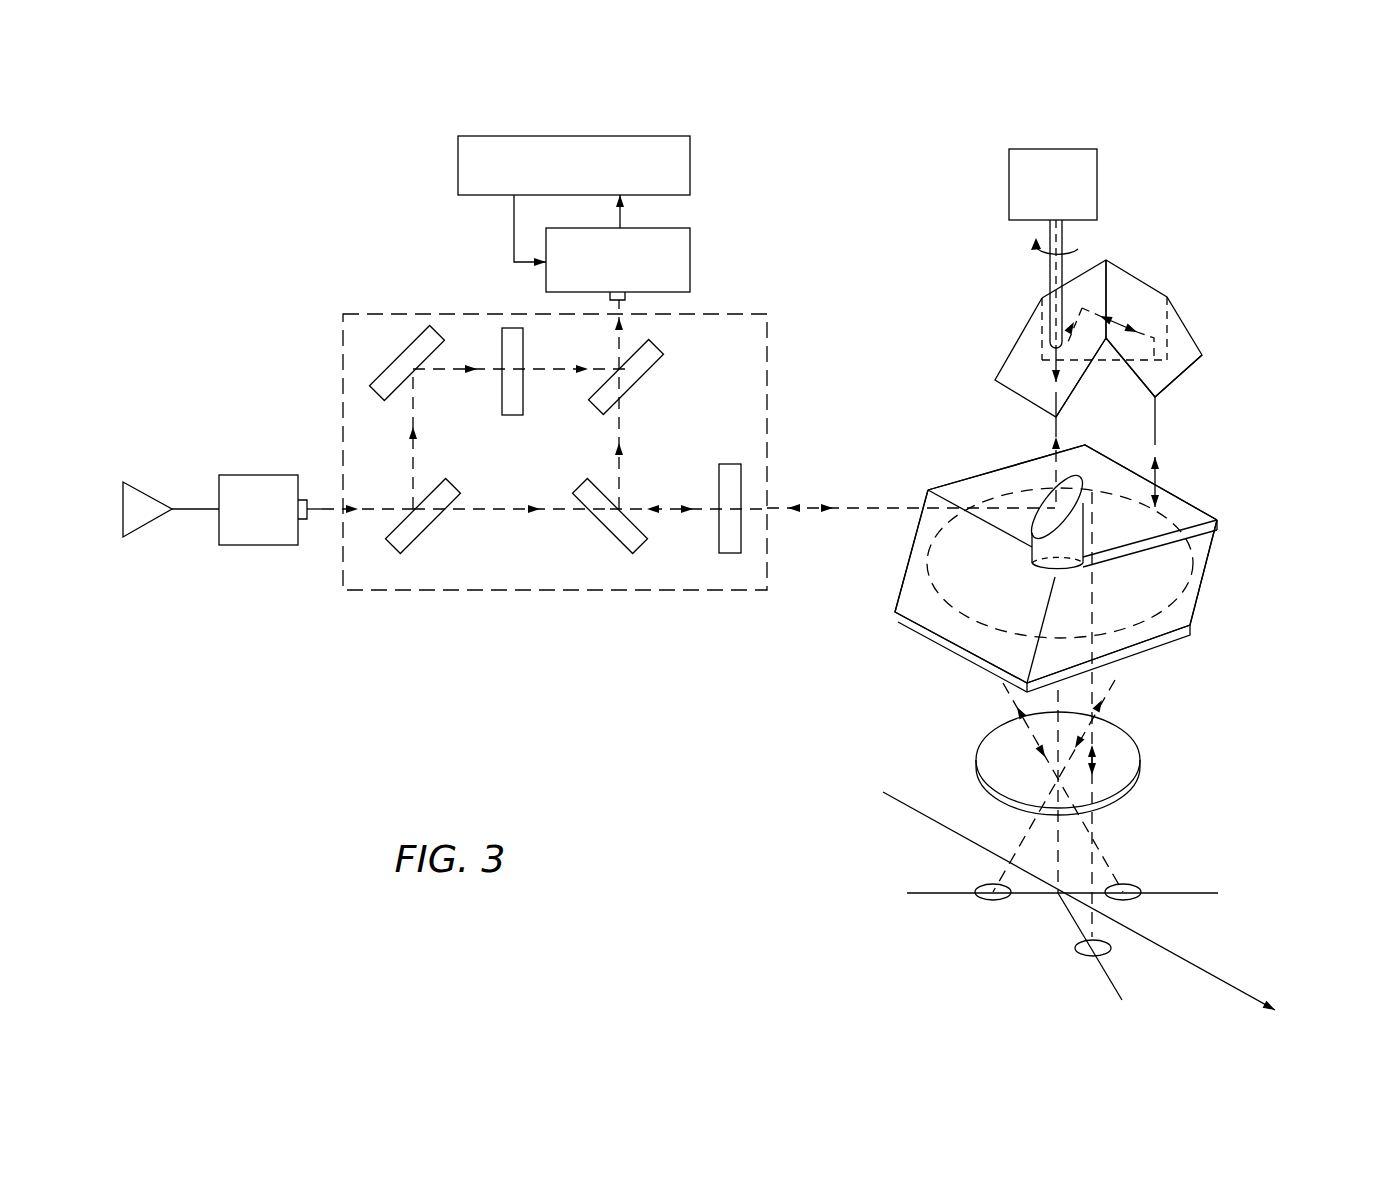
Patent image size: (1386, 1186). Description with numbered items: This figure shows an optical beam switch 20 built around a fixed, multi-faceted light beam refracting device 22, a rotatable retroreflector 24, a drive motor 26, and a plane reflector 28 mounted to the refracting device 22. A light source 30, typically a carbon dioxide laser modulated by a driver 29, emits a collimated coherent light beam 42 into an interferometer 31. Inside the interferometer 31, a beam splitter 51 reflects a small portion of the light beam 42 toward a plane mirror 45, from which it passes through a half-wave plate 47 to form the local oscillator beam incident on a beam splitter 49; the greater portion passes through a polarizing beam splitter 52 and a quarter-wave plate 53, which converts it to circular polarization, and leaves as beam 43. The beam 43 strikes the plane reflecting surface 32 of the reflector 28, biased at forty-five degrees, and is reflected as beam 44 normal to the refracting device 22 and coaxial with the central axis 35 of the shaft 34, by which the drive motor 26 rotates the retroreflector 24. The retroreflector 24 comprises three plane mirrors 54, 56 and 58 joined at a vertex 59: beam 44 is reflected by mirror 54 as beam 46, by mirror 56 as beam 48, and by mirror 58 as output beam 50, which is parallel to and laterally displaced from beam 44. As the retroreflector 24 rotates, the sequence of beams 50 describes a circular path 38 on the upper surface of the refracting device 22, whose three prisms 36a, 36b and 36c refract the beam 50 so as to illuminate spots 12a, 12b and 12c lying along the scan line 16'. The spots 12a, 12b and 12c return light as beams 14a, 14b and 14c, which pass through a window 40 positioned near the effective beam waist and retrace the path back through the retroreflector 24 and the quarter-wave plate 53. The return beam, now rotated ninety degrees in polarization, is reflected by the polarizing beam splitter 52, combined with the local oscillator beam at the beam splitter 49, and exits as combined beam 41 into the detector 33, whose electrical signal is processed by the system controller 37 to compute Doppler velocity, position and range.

The illuminated spot 12a is at (1137, 903).
The illuminated spot 12b is at (1085, 958).
The illuminated spot 12c is at (992, 905).
The return beam 14a is at (1108, 862).
The return beam 14b is at (1094, 812).
The return beam 14c is at (1028, 835).
The scan line 16' is at (1079, 901).
The optical beam switch 20 is at (1278, 408).
The multi-faceted light beam refracting device 22 is at (1117, 568).
The rotatable retroreflector 24 is at (1138, 278).
The drive motor 26 is at (1093, 177).
The plane reflector 28 is at (1087, 520).
The driver 29 is at (158, 495).
The light source 30 is at (271, 475).
The interferometer 31 is at (553, 590).
The plane reflecting surface 32 is at (1057, 507).
The detector 33 is at (688, 262).
The shaft 34 is at (1045, 234).
The central axis 35 is at (1050, 279).
The prism 36a is at (908, 588).
The prism 36b is at (1186, 507).
The prism 36c is at (1190, 610).
The system controller 37 is at (688, 168).
The circular path 38 is at (996, 630).
The window 40 is at (1123, 740).
The combined beam 41 is at (617, 345).
The light beam 42 is at (317, 506).
The output beam 43 is at (856, 505).
The input beam 44 is at (1050, 418).
The plane mirror 45 is at (390, 388).
The light beam 46 is at (1072, 332).
The half-wave plate 47 is at (512, 415).
The light beam 48 is at (1120, 324).
The beam splitter 49 is at (650, 370).
The output beam 50 is at (1158, 432).
The beam splitter 51 is at (405, 535).
The polarizing beam splitter 52 is at (625, 535).
The quarter-wave plate 53 is at (728, 535).
The plane mirror 54 is at (1070, 385).
The plane mirror 56 is at (1108, 357).
The plane mirror 58 is at (1173, 377).
The vertex 59 is at (1106, 262).